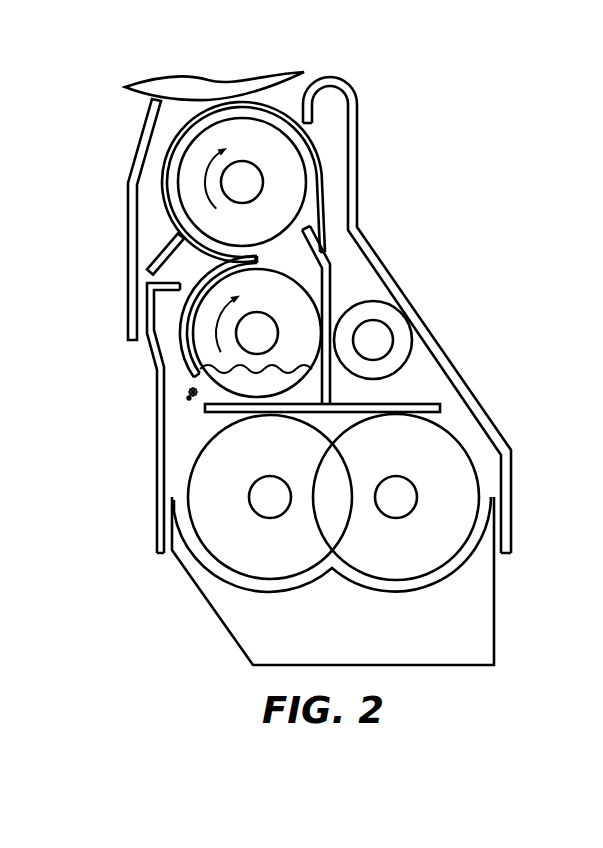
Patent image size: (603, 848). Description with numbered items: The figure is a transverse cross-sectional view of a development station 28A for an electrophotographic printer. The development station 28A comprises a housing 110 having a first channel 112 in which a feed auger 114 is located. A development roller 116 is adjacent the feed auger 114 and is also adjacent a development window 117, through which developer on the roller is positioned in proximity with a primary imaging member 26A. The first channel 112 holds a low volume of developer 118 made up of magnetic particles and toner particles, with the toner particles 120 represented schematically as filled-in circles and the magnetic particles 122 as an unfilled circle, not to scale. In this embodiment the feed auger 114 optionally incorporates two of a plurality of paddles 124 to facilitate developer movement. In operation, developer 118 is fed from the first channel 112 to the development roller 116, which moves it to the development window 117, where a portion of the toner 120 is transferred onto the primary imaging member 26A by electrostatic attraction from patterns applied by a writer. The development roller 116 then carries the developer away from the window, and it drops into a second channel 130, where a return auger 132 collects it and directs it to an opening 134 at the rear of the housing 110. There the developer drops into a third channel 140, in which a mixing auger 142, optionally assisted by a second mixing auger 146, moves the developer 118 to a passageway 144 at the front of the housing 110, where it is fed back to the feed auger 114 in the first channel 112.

The development station 28A is at (479, 65).
The primary imaging member 26A is at (141, 93).
The housing 110 is at (358, 130).
The first channel 112 is at (313, 281).
The feed auger 114 is at (260, 331).
The development roller 116 is at (293, 176).
The development window 117 is at (290, 104).
The developer 118 is at (174, 381).
The toner particles 120 is at (186, 399).
The magnetic particles 122 is at (187, 394).
The paddles 124 is at (226, 268).
The second channel 130 is at (337, 312).
The return auger 132 is at (396, 330).
The opening 134 is at (453, 410).
The third channel 140 is at (478, 444).
The mixing auger 142 is at (189, 488).
The passageway 144 is at (191, 410).
The second mixing auger 146 is at (468, 491).